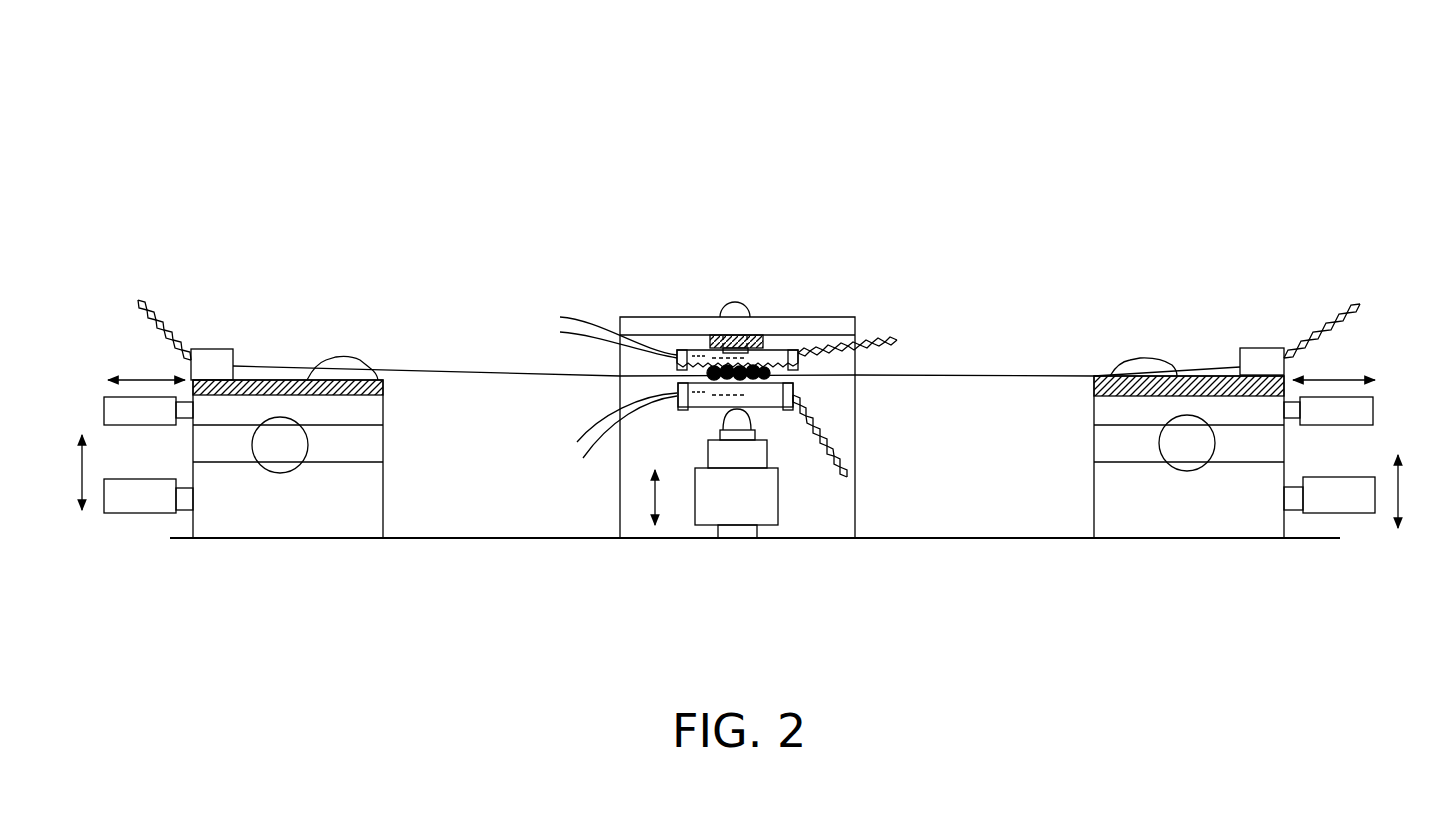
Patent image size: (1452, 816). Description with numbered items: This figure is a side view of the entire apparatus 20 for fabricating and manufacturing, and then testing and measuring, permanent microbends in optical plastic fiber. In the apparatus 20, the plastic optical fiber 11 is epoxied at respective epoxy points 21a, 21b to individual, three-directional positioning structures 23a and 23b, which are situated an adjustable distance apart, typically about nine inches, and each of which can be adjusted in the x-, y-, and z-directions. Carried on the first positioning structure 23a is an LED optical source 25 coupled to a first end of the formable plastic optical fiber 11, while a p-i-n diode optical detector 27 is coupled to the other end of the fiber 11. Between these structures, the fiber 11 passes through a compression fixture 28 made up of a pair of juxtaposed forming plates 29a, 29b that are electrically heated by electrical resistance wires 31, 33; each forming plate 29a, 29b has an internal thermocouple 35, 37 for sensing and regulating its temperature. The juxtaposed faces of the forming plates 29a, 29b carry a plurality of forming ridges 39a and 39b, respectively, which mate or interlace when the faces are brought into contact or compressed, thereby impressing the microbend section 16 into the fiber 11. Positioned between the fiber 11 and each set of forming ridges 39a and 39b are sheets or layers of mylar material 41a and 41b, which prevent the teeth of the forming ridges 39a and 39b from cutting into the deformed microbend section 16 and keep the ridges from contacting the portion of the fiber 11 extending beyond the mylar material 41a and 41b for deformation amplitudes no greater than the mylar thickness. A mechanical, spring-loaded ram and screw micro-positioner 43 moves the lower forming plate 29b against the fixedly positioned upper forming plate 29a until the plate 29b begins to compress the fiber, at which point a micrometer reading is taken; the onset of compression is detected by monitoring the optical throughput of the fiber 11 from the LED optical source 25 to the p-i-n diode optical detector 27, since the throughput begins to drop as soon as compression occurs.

The apparatus 20 is at (812, 160).
The plastic optical fiber 11 is at (950, 380).
The microbend section 16 is at (776, 347).
The epoxy point 21a is at (350, 356).
The epoxy point 21b is at (1120, 362).
The positioning structure 23a is at (383, 410).
The positioning structure 23b is at (1094, 480).
The LED optical source 25 is at (218, 346).
The p-i-n diode optical detector 27 is at (1266, 346).
The compression fixture 28 is at (758, 365).
The forming plate 29a is at (791, 350).
The forming plate 29b is at (757, 408).
The electrical resistance wire 31 is at (873, 342).
The electrical resistance wire 33 is at (828, 450).
The thermocouple 35 is at (693, 343).
The thermocouple 37 is at (707, 406).
The forming ridges 39a is at (703, 350).
The forming ridges 39b is at (677, 399).
The mylar material 41a is at (677, 383).
The mylar material 41b is at (798, 378).
The micro-positioner 43 is at (713, 518).